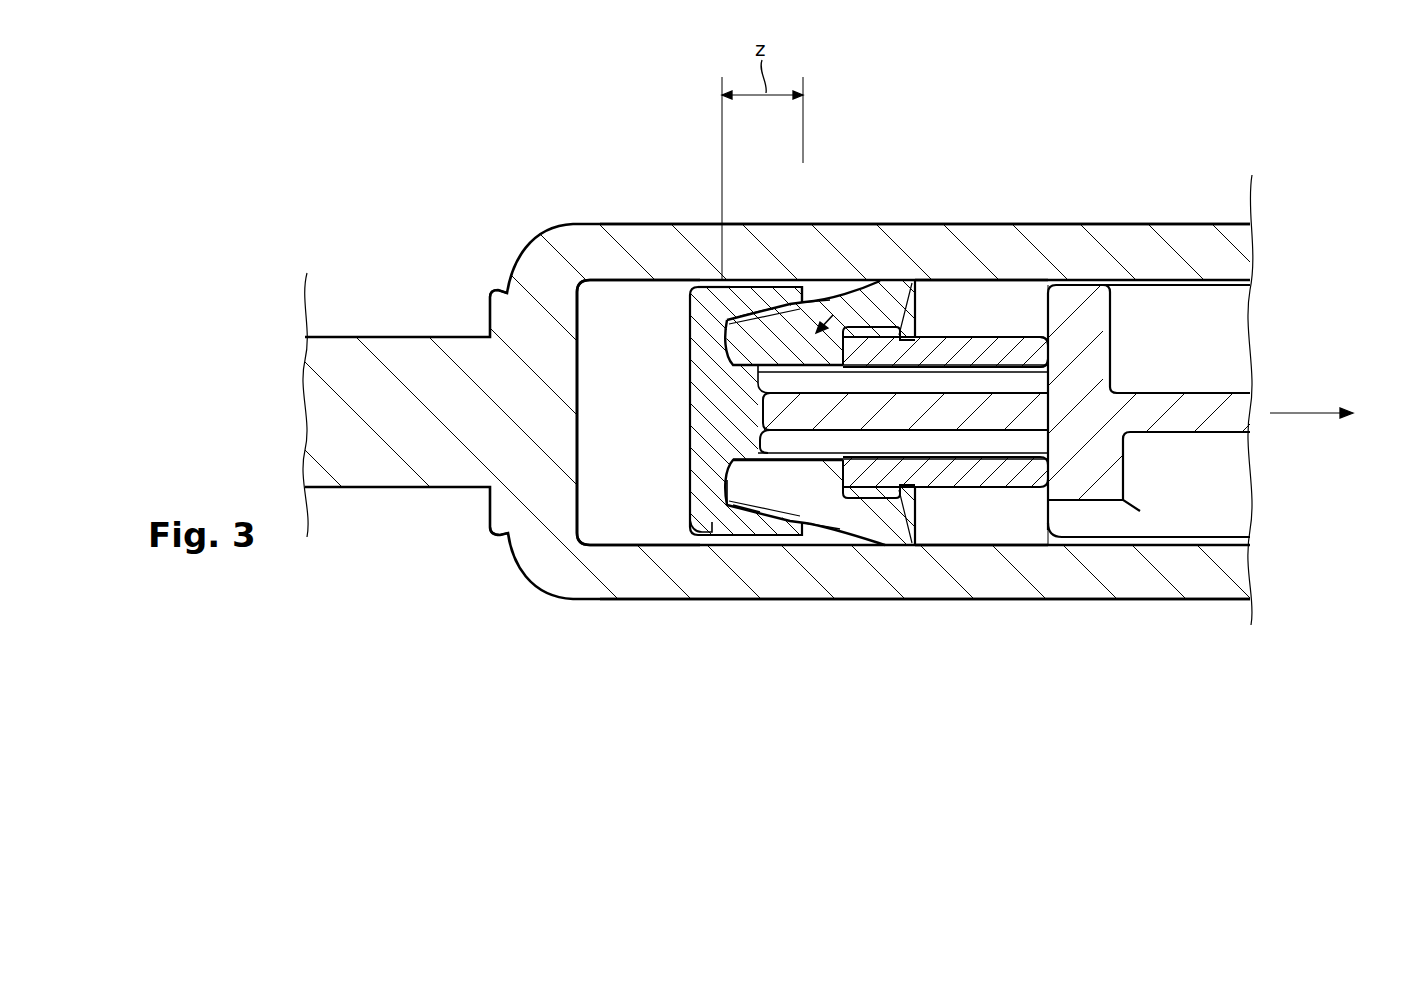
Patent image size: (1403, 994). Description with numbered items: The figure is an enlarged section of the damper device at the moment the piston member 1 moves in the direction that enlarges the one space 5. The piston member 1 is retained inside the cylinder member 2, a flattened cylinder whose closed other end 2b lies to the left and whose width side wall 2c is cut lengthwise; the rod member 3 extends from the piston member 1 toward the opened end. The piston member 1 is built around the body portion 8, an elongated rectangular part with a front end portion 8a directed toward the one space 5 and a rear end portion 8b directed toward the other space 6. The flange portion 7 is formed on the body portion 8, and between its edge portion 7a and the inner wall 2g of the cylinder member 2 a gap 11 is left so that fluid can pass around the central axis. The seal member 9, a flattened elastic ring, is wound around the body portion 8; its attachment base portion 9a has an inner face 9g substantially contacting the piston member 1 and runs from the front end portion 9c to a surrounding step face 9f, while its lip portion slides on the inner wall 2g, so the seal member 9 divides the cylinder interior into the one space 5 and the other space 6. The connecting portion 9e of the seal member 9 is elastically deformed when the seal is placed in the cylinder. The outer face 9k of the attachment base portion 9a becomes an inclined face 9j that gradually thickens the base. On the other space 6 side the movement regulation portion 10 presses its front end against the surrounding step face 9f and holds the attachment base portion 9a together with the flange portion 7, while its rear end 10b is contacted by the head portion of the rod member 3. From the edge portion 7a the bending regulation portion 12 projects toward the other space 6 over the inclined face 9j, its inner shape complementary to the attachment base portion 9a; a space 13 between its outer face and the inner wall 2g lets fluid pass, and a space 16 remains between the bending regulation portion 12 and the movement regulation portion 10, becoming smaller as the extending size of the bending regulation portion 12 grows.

The piston member 1 is at (997, 300).
The cylinder member 2 is at (1205, 600).
The closed other end 2b is at (512, 547).
The width side wall 2c is at (1132, 224).
The inner wall 2g is at (950, 281).
The rod member 3 is at (1232, 372).
The one space 5 is at (628, 424).
The other space 6 is at (1007, 528).
The flange portion 7 is at (705, 537).
The edge portion 7a is at (708, 535).
The body portion 8 is at (1100, 373).
The front end portion 8a is at (767, 412).
The rear end portion 8b is at (1126, 461).
The seal member 9 is at (818, 540).
The attachment base portion 9a is at (742, 518).
The front end portion 9c is at (727, 487).
The connecting portion 9e is at (830, 500).
The surrounding step face 9f is at (902, 346).
The inner face 9g is at (756, 385).
The inclined face 9j is at (752, 281).
The outer face 9k is at (752, 284).
The movement regulation portion 10 is at (1027, 478).
The rear end 10b is at (1052, 352).
The gap 11 is at (713, 281).
The bending regulation portion 12 is at (815, 290).
The space 13 is at (793, 281).
The space 16 is at (848, 283).